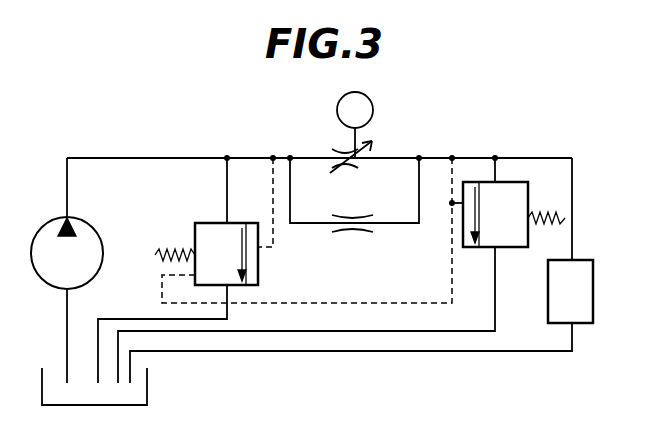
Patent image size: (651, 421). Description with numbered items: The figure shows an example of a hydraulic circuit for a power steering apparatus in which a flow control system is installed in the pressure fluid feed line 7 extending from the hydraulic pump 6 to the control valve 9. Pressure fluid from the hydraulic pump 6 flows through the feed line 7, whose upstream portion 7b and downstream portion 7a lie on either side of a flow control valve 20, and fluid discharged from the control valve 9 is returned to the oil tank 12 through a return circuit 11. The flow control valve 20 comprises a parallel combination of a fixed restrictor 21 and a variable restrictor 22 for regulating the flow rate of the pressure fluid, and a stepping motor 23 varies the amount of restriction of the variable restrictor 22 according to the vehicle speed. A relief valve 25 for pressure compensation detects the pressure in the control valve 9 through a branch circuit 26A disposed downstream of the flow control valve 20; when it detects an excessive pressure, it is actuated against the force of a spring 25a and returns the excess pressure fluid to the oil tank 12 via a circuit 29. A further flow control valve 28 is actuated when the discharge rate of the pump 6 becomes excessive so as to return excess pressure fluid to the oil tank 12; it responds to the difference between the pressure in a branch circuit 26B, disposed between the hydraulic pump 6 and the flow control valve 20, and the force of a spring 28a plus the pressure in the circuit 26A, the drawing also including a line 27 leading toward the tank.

The hydraulic pump 6 is at (46, 236).
The pressure fluid feed line 7 is at (156, 157).
The conduit portion downstream of flow control valve 7a is at (304, 224).
The conduit portion upstream of flow control valve 7b is at (327, 157).
The control valve 9 is at (593, 297).
The return circuit 11 is at (338, 352).
The oil tank 12 is at (148, 395).
The flow control valve 20 is at (302, 152).
The fixed restrictor 21 is at (357, 231).
The variable restrictor 22 is at (368, 167).
The stepping motor 23 is at (365, 106).
The relief valve 25 is at (515, 182).
The spring 25a is at (546, 222).
The branch circuit 26A is at (449, 238).
The branch circuit 26B is at (271, 211).
The drain line 27 is at (386, 330).
The flow control valve 28 is at (209, 222).
The spring 28a is at (181, 251).
The circuit 29 is at (127, 318).